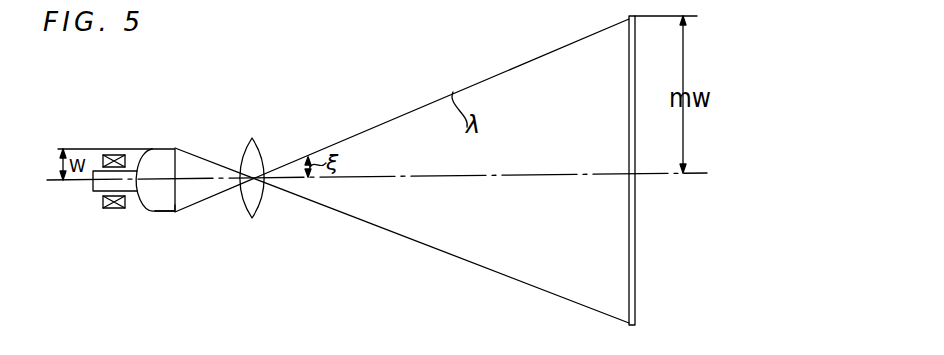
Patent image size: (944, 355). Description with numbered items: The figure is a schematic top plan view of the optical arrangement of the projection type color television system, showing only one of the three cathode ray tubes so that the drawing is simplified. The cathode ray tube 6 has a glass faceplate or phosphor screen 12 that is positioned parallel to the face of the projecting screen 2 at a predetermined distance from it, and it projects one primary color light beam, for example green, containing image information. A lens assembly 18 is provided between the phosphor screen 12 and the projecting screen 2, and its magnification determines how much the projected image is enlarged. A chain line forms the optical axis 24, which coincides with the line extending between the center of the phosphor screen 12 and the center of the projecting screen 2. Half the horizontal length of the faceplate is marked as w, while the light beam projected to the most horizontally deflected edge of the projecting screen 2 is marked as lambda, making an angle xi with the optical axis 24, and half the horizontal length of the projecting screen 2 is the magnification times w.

The projecting screen 2 is at (635, 257).
The cathode ray tube 6 is at (162, 157).
The glass faceplate or phosphor screen 12 is at (175, 197).
The lens assembly 18 is at (253, 160).
The optical axis 24 is at (482, 177).